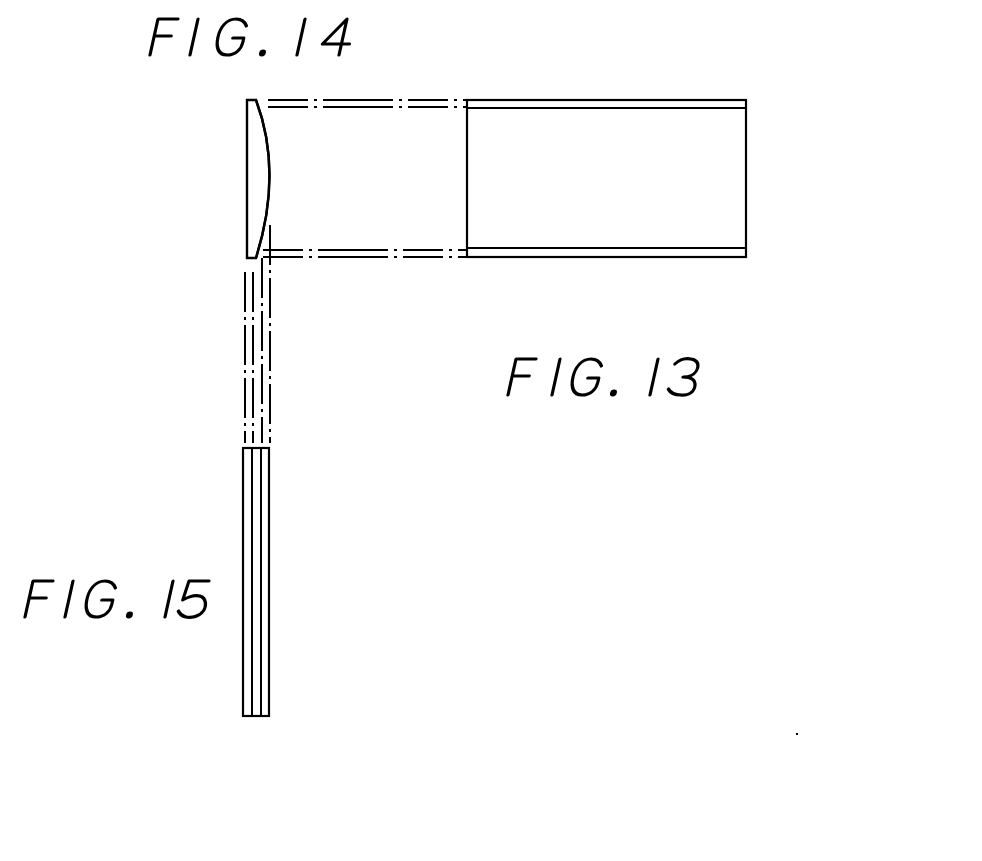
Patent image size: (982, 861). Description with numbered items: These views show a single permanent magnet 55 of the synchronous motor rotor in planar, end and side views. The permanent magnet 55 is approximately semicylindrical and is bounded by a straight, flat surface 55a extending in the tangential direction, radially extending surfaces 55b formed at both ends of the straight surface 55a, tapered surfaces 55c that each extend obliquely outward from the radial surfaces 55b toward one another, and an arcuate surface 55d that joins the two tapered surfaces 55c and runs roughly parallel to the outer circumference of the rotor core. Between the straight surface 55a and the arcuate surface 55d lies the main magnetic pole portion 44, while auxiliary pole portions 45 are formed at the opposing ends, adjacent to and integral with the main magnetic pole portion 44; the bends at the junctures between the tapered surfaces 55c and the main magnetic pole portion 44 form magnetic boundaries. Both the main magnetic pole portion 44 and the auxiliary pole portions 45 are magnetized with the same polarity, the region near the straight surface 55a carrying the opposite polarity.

In FIG. 13, the main magnetic pole portion 44 is at (622, 187).
In FIG. 13, the auxiliary pole portions 45 is at (579, 100).
In FIG. 13, the permanent magnet 55 is at (658, 172).
In FIG. 14, the straight surface 55a is at (247, 210).
In FIG. 15, the radially extending surfaces 55b is at (248, 718).
In FIG. 15, the tapered surfaces 55c is at (253, 718).
In FIG. 14, the arcuate surface 55d is at (270, 167).
In FIG. 15, the arcuate surface 55d is at (263, 705).